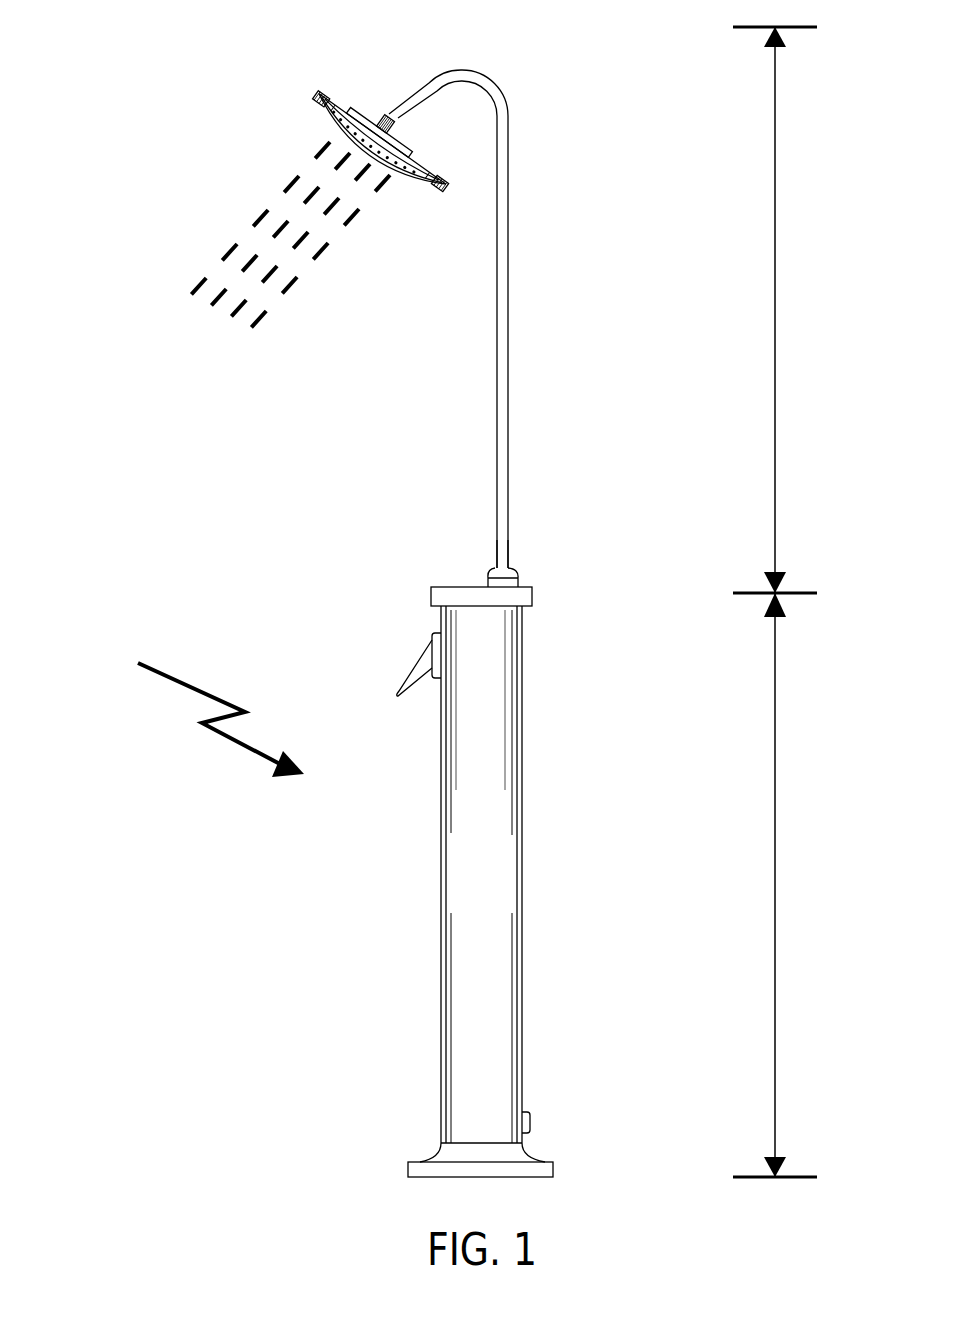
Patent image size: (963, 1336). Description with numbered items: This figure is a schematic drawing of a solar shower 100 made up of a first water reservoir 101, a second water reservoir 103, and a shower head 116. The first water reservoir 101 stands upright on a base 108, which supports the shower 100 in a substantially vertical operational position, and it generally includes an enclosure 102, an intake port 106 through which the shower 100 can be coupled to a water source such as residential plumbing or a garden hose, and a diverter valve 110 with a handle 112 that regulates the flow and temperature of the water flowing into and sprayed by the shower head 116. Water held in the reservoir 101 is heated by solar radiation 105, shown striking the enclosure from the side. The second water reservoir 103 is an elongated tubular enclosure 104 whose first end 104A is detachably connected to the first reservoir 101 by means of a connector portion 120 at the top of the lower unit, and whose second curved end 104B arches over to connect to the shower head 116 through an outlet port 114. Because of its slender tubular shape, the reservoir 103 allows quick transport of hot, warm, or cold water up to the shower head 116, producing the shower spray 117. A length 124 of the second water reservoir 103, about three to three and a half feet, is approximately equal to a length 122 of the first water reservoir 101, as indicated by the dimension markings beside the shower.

The solar shower 100 is at (492, 29).
The first water reservoir 101 is at (266, 853).
The enclosure 102 is at (524, 940).
The second water reservoir 103 is at (245, 482).
The enclosure 104 is at (510, 300).
The first end 104A is at (488, 566).
The second curved end 104B is at (513, 84).
The solar radiation 105 is at (183, 687).
The intake port 106 is at (531, 1113).
The base 108 is at (550, 1162).
The diverter valve 110 is at (434, 632).
The handle 112 is at (403, 670).
The outlet port 114 is at (386, 110).
The shower head 116 is at (320, 98).
The shower spray 117 is at (372, 275).
The connector portion 120 is at (527, 560).
The length 122 is at (775, 778).
The length 124 is at (775, 352).